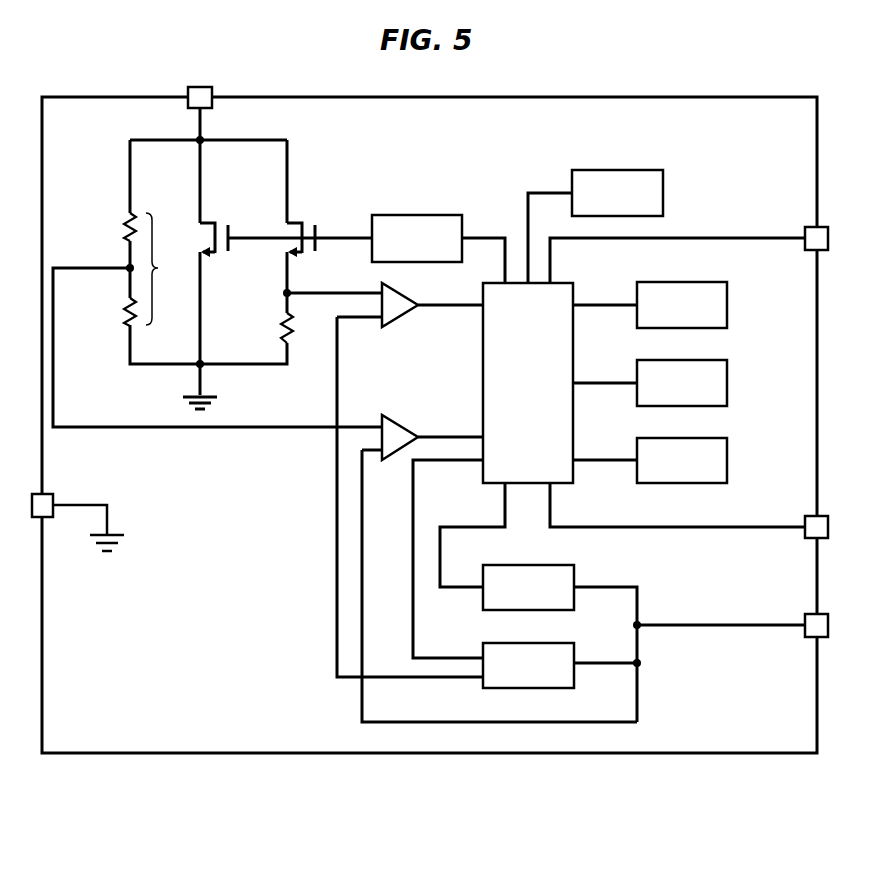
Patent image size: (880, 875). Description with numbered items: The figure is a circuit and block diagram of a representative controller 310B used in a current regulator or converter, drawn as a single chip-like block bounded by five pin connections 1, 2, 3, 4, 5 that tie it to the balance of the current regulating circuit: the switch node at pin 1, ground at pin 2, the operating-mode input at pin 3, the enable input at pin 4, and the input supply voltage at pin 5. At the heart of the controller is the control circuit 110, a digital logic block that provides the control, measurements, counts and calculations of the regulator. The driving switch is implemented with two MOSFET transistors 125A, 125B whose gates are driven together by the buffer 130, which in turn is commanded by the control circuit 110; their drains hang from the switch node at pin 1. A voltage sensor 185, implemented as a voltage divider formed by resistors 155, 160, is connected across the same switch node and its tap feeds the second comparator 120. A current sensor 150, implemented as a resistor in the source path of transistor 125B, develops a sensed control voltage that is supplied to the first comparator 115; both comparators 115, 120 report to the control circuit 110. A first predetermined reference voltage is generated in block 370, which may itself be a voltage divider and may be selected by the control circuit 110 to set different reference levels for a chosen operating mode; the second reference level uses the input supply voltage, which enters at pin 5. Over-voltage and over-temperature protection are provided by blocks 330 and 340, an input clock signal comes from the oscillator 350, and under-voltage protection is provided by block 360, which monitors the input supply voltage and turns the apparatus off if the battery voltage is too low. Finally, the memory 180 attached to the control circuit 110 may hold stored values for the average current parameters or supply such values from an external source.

The pin connection 1 is at (203, 113).
The pin connection 2 is at (78, 509).
The pin connection 3 is at (805, 243).
The pin connection 4 is at (807, 534).
The pin connection 5 is at (804, 627).
The control circuit 110 is at (574, 346).
The first comparator 115 is at (400, 316).
The second comparator 120 is at (398, 424).
The MOSFET transistor 125A is at (205, 223).
The MOSFET transistor 125B is at (292, 223).
The buffer 130 is at (413, 215).
The current sensor 150 is at (278, 328).
The resistor 155 is at (122, 230).
The resistor 160 is at (122, 313).
The memory 180 is at (616, 170).
The voltage sensor 185 is at (171, 269).
The controller 310B is at (132, 753).
The over-voltage protection block 330 is at (727, 305).
The over-temperature protection block 340 is at (727, 383).
The oscillator 350 is at (727, 460).
The under-voltage protection block 360 is at (483, 602).
The voltage reference block 370 is at (575, 648).